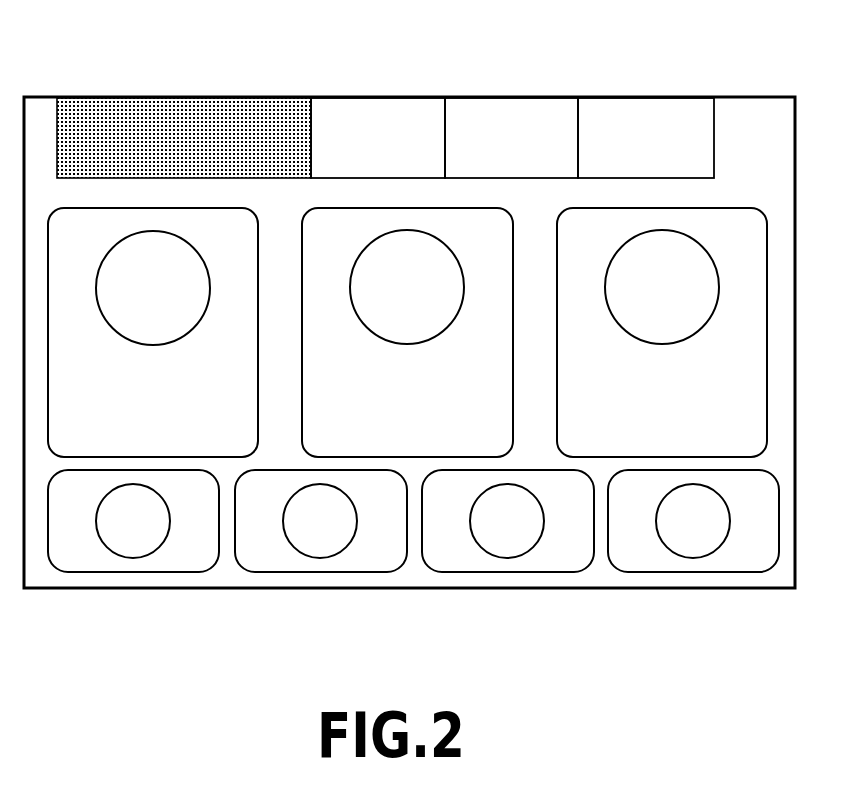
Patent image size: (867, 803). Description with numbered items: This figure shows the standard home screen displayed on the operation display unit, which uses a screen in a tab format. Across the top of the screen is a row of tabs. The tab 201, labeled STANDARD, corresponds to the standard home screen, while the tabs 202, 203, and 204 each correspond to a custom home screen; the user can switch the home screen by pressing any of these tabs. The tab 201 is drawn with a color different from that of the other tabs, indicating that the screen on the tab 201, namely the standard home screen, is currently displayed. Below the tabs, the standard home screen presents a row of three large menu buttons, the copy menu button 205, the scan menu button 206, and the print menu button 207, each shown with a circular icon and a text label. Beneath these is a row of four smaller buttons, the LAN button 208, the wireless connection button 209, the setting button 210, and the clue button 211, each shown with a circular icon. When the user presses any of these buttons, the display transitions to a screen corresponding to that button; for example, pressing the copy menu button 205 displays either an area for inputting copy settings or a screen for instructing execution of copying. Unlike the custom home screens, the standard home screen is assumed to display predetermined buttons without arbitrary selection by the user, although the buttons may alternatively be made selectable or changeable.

The tab 201 is at (180, 103).
The tab 202 is at (388, 105).
The tab 203 is at (512, 105).
The tab 204 is at (640, 105).
The copy menu button 205 is at (248, 239).
The scan menu button 206 is at (502, 240).
The print menu button 207 is at (739, 232).
The LAN button 208 is at (127, 571).
The wireless connection button 209 is at (315, 571).
The setting button 210 is at (503, 571).
The clue button 211 is at (692, 571).